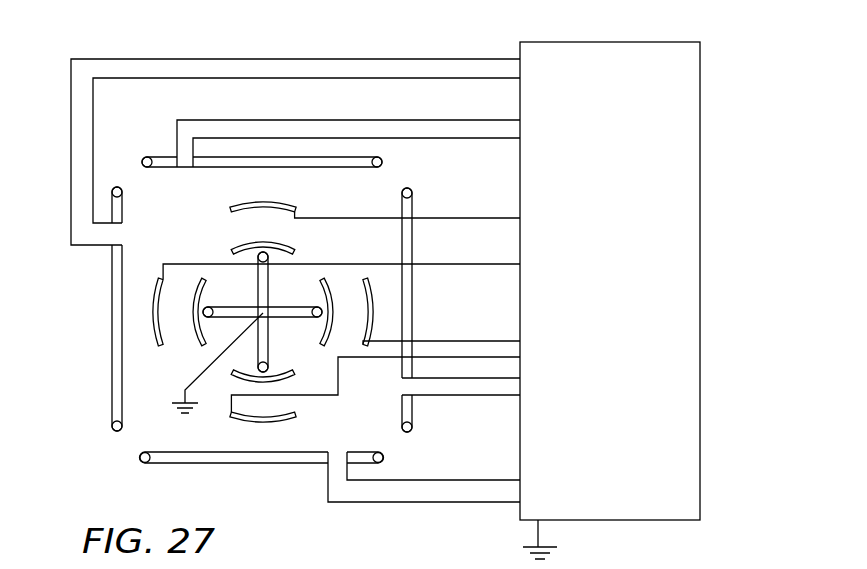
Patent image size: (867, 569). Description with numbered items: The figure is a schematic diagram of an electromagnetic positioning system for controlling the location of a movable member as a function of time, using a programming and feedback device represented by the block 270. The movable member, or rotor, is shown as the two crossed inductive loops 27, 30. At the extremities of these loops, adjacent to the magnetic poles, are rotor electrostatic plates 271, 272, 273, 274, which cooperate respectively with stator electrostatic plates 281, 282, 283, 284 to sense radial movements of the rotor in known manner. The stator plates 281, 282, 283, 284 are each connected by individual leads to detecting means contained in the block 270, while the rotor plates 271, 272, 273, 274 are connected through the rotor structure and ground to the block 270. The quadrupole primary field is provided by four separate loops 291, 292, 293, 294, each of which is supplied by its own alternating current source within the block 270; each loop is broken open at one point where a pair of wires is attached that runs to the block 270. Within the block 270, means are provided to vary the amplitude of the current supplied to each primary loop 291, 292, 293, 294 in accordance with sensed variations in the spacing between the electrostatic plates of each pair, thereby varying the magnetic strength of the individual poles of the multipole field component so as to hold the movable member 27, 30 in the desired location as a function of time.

The inductive loop 27 is at (291, 318).
The inductive loop 30 is at (282, 276).
The programming and feedback means 270 is at (692, 79).
The rotor electrostatic plate 271 is at (330, 279).
The rotor electrostatic plate 272 is at (200, 336).
The rotor electrostatic plate 273 is at (241, 247).
The rotor electrostatic plate 274 is at (293, 375).
The stator electrostatic plate 281 is at (368, 301).
The stator electrostatic plate 282 is at (153, 308).
The stator electrostatic plate 283 is at (263, 202).
The stator electrostatic plate 284 is at (263, 421).
The primary loop 291 is at (412, 208).
The primary loop 292 is at (112, 259).
The primary loop 293 is at (336, 157).
The primary loop 294 is at (173, 464).